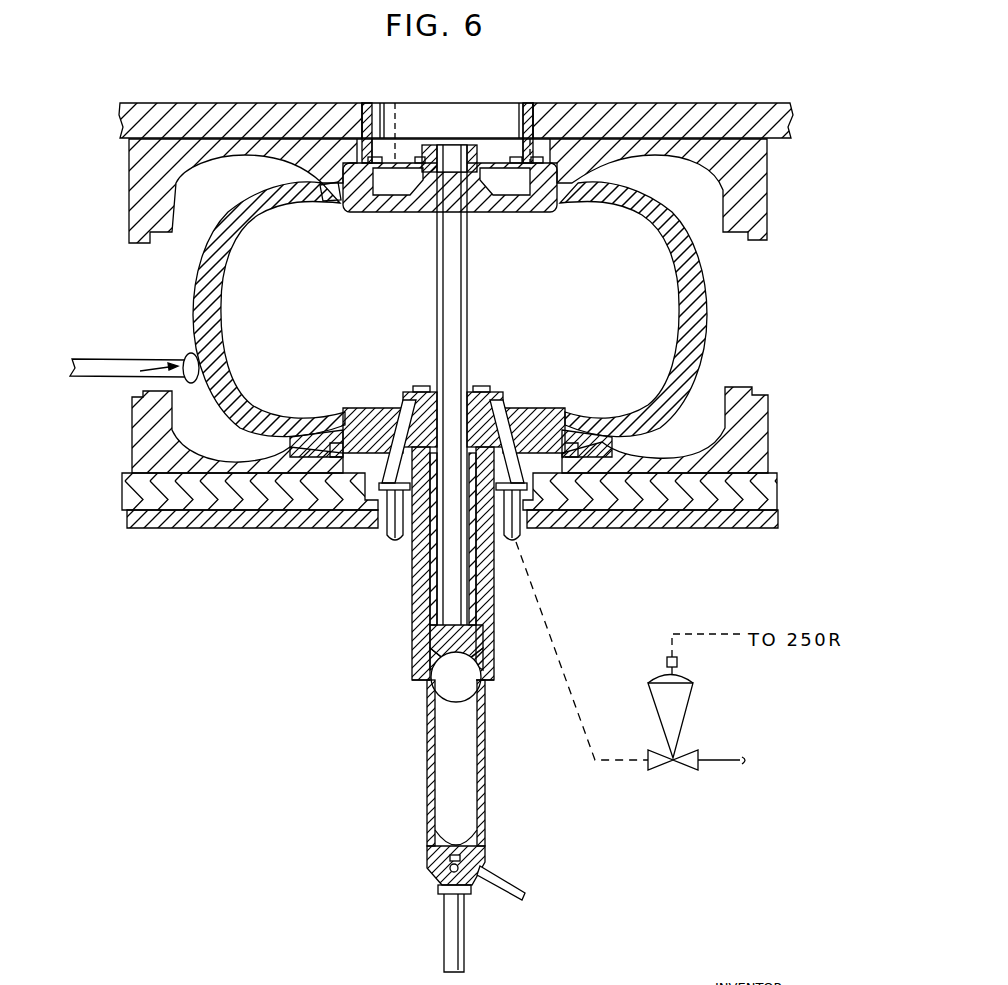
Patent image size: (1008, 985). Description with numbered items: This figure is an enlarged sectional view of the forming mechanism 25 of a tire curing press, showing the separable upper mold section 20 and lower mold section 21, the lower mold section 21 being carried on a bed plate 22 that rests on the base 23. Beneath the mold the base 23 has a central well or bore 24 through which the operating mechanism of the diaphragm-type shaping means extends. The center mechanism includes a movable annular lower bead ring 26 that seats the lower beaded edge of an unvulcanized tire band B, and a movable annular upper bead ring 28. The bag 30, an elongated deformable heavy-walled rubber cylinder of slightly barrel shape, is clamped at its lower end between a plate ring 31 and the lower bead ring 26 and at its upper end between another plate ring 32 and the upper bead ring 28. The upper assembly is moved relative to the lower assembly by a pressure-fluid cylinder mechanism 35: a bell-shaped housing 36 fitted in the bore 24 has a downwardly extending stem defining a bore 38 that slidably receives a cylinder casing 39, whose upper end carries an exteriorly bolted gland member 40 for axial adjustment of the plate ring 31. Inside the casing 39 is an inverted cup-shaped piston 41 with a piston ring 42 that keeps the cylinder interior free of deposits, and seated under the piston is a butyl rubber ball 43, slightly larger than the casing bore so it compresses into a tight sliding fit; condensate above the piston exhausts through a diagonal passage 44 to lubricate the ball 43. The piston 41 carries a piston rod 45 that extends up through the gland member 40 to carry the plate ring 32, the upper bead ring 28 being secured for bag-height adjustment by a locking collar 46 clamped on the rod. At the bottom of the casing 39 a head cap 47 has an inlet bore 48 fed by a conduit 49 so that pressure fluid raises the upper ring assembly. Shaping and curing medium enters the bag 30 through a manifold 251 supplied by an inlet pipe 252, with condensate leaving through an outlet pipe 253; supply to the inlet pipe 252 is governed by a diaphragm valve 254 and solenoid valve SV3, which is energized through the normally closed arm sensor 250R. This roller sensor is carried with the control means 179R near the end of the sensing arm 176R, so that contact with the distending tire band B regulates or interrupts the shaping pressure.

The upper mold section 20 is at (768, 212).
The lower mold section 21 is at (763, 413).
The bed plate 22 is at (774, 478).
The base 23 is at (723, 529).
The central well or bore 24 is at (532, 528).
The forming mechanism 25 is at (650, 299).
The lower bead ring 26 is at (295, 446).
The upper bead ring 28 is at (322, 193).
The bag 30 is at (218, 298).
The plate ring 31 is at (367, 407).
The plate ring 32 is at (374, 212).
The cylinder mechanism 35 is at (424, 734).
The bell-shaped housing 36 is at (417, 563).
The bore 38 is at (420, 593).
The cylinder casing 39 is at (428, 683).
The gland member 40 is at (488, 405).
The piston 41 is at (428, 655).
The piston ring 42 is at (480, 648).
The ball 43 is at (465, 688).
The diagonal passage 44 is at (473, 635).
The piston rod 45 is at (468, 313).
The locking collar 46 is at (470, 150).
The head cap 47 is at (430, 877).
The inlet bore 48 is at (462, 866).
The conduit 49 is at (522, 900).
The sensing arm 176R is at (100, 366).
The control means 179R is at (172, 368).
The arm sensor 250R is at (189, 353).
The manifold 251 is at (492, 407).
The inlet pipe 252 is at (517, 540).
The outlet pipe 253 is at (388, 536).
The diaphragm valve 254 is at (680, 716).
The tire band B is at (708, 329).
The solenoid valve SV3 is at (678, 662).